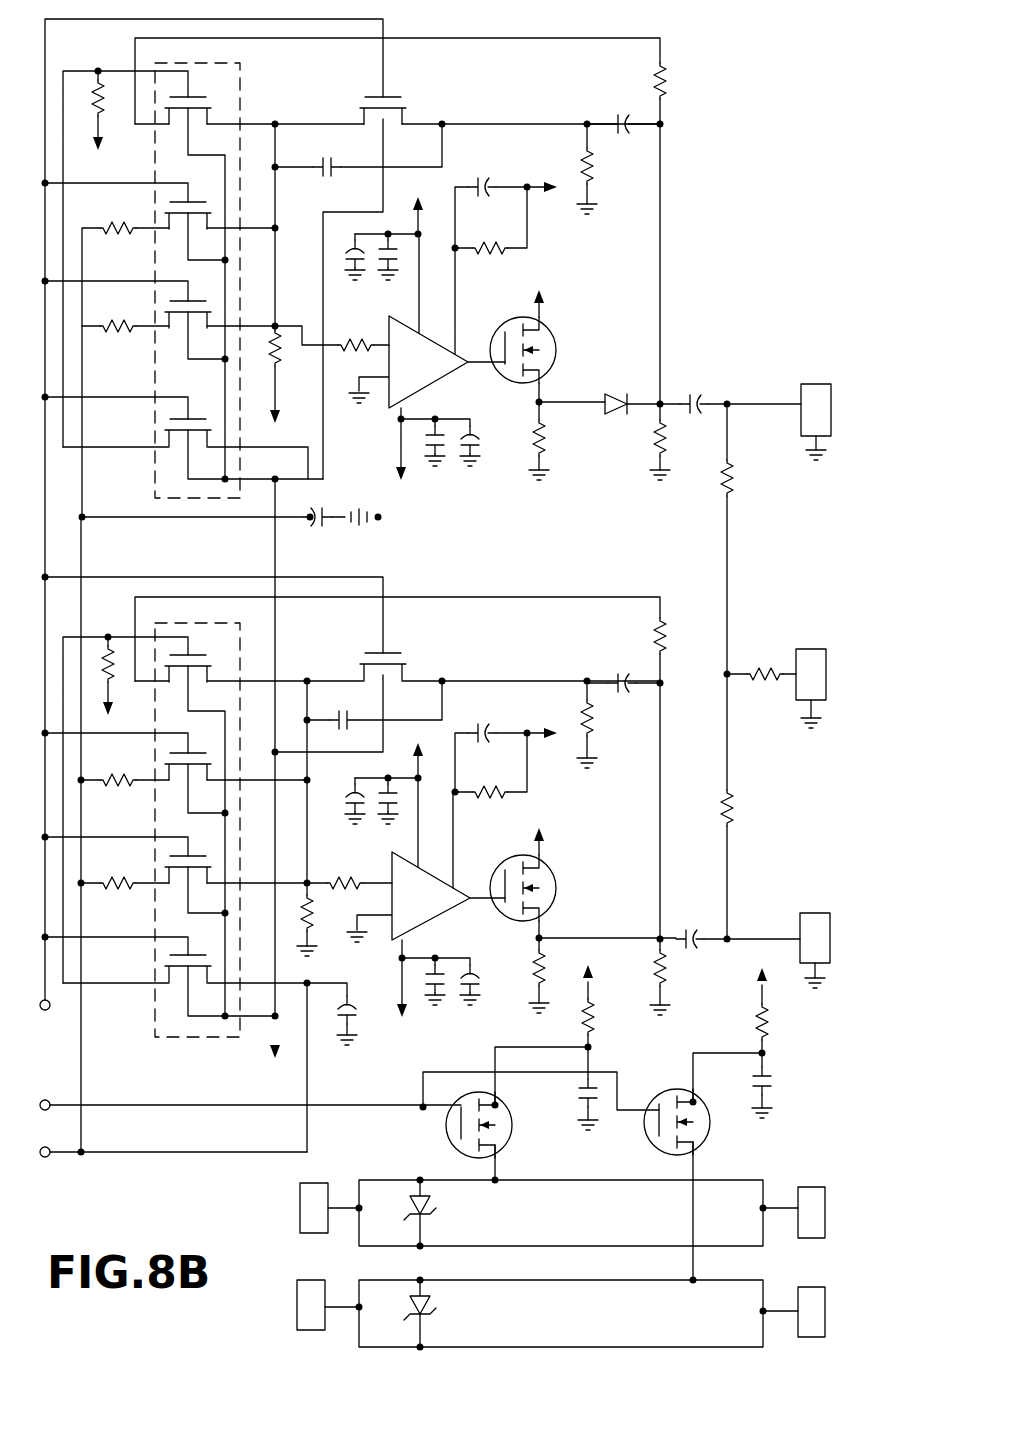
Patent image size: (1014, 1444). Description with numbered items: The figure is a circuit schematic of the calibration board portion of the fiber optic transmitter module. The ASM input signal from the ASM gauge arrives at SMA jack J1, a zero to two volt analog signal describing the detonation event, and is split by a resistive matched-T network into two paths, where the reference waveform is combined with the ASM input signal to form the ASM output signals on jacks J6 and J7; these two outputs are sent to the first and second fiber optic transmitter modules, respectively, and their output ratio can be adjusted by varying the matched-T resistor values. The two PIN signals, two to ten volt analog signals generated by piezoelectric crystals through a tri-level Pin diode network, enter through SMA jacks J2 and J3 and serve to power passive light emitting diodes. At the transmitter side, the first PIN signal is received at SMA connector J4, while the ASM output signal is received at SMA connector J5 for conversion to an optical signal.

The SMA jack J1 is at (797, 652).
The SMA jack J2 is at (815, 1188).
The SMA jack J3 is at (798, 1320).
The SMA connector J4 is at (322, 1183).
The SMA connector J5 is at (307, 1280).
The jack J6 is at (801, 386).
The jack J7 is at (808, 912).